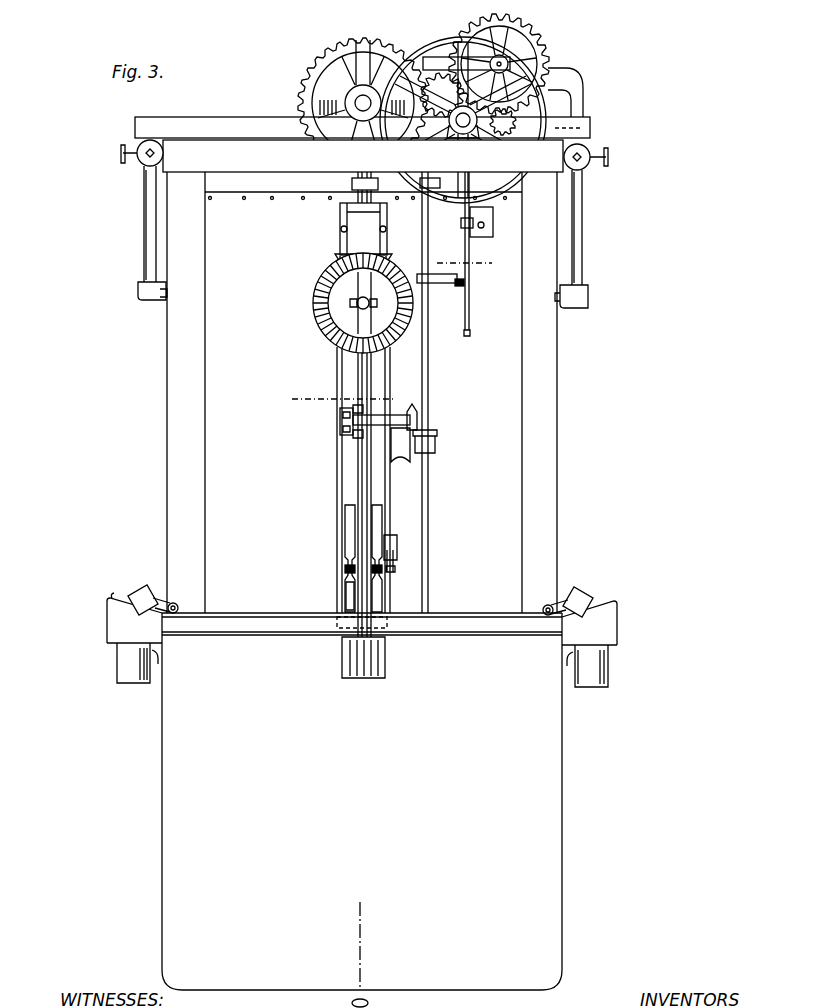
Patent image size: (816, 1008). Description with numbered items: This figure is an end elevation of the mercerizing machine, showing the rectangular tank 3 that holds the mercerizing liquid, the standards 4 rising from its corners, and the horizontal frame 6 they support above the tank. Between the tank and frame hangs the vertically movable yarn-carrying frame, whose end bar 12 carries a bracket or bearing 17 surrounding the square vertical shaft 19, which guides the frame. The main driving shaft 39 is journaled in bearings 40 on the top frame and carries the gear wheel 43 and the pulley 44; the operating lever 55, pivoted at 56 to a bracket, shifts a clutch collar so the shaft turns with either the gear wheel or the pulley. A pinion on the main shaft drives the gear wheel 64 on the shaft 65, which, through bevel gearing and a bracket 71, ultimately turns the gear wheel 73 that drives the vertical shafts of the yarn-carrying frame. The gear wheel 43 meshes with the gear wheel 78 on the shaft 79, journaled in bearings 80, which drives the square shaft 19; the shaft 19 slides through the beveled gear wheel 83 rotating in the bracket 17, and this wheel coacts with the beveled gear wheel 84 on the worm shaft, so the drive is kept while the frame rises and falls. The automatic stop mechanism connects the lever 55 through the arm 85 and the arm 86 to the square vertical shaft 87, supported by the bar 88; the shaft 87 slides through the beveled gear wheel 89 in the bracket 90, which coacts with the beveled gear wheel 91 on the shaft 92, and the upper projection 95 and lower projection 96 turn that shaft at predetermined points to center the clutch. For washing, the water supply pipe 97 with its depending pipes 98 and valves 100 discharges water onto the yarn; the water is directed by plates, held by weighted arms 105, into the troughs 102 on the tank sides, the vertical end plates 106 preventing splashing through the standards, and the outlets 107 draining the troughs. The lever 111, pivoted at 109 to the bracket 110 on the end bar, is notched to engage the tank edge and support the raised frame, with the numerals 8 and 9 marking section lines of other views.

The tank 3 is at (562, 776).
The standards 4 is at (180, 482).
The horizontal frame 6 is at (213, 150).
The shaft 8 is at (362, 63).
The rod 9 is at (440, 264).
The end bar 12 is at (348, 494).
The bracket or bearing 17 is at (357, 217).
The vertical shaft 19 is at (360, 380).
The main driving shaft 39 is at (473, 128).
The bearings 40 is at (456, 128).
The gear wheel 43 is at (448, 92).
The pulley 44 is at (506, 196).
The operating lever 55 is at (470, 306).
The pivot 56 is at (462, 225).
The gear wheel 64 is at (543, 44).
The shaft 65 is at (506, 64).
The bracket 71 is at (578, 96).
The gear wheel 73 is at (318, 100).
The gear wheel 78 is at (381, 55).
The shaft 79 is at (352, 97).
The bearings 80 is at (357, 124).
The beveled gear wheel 83 is at (338, 254).
The beveled gear wheel 84 is at (315, 313).
The arm 85 is at (461, 288).
The arm 86 is at (435, 268).
The vertical shaft 87 is at (427, 508).
The bar 88 is at (433, 184).
The beveled gear wheel 89 is at (436, 433).
The bracket 90 is at (398, 462).
The beveled gear wheel 91 is at (414, 412).
The shaft 92 is at (342, 425).
The upper projection 95 is at (347, 406).
The lower projection 96 is at (358, 438).
The water supply pipe 97 is at (143, 165).
The depending pipes 98 is at (150, 253).
The valves 100 is at (121, 155).
The troughs 102 is at (120, 627).
The weighted arms 105 is at (147, 574).
The vertical end plates 106 is at (290, 217).
The outlets 107 is at (126, 670).
The pivot 109 is at (397, 541).
The bracket 110 is at (347, 520).
The lever 111 is at (350, 602).